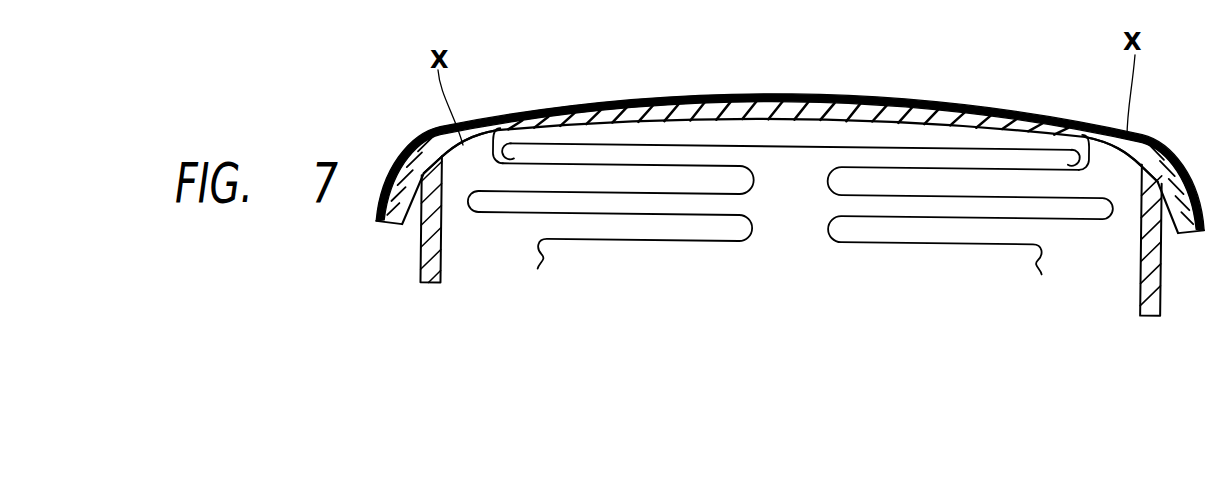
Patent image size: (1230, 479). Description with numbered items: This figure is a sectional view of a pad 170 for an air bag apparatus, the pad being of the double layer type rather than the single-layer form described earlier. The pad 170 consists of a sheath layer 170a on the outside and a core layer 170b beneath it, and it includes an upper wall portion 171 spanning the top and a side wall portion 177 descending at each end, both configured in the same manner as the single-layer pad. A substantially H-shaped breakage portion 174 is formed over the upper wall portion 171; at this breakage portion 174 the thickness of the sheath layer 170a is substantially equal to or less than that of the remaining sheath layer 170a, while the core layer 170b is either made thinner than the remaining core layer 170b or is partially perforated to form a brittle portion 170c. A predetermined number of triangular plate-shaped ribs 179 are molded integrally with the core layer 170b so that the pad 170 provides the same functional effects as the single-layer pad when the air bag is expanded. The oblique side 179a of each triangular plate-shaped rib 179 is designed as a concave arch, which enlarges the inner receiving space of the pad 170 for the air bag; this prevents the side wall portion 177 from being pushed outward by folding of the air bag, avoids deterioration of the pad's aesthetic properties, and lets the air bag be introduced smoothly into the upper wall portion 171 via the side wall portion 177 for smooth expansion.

The pad 170 is at (933, 100).
The sheath layer 170a is at (806, 93).
The core layer 170b is at (861, 100).
The brittle portion 170c is at (511, 152).
The upper wall portion 171 is at (673, 98).
The breakage portion 174 is at (483, 110).
The side wall portion 177 is at (420, 240).
The triangular plate-shaped rib 179 is at (440, 143).
The oblique side 179a is at (447, 157).